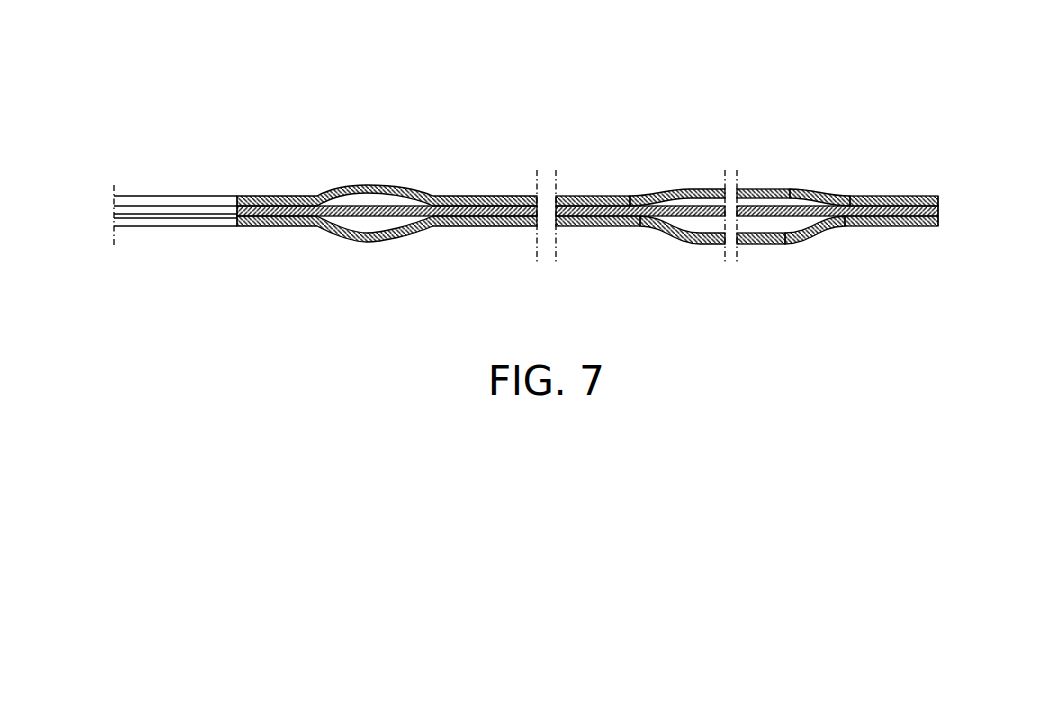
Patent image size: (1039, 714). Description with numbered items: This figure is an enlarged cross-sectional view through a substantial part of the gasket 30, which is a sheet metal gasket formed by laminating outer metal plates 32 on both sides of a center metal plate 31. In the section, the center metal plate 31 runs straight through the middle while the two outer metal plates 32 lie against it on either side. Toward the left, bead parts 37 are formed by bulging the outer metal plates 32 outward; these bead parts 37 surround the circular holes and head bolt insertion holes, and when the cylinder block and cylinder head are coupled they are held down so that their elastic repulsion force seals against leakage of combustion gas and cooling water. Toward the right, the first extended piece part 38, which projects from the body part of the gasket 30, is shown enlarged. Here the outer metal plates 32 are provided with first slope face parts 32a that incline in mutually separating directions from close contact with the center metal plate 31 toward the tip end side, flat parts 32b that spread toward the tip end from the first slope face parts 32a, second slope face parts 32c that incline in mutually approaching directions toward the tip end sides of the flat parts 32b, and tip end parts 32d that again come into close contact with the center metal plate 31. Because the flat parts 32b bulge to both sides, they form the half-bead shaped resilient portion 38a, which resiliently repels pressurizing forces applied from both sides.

The gasket 30 is at (941, 100).
The center metal plate 31 is at (411, 207).
The outer metal plates 32 is at (490, 196).
The first slope face parts 32a is at (656, 196).
The flat parts 32b is at (705, 189).
The second slope face parts 32c is at (815, 189).
The tip end parts 32d is at (918, 196).
The bead parts 37 is at (350, 166).
The first extended piece part 38 is at (866, 178).
The resilient portion 38a is at (771, 170).